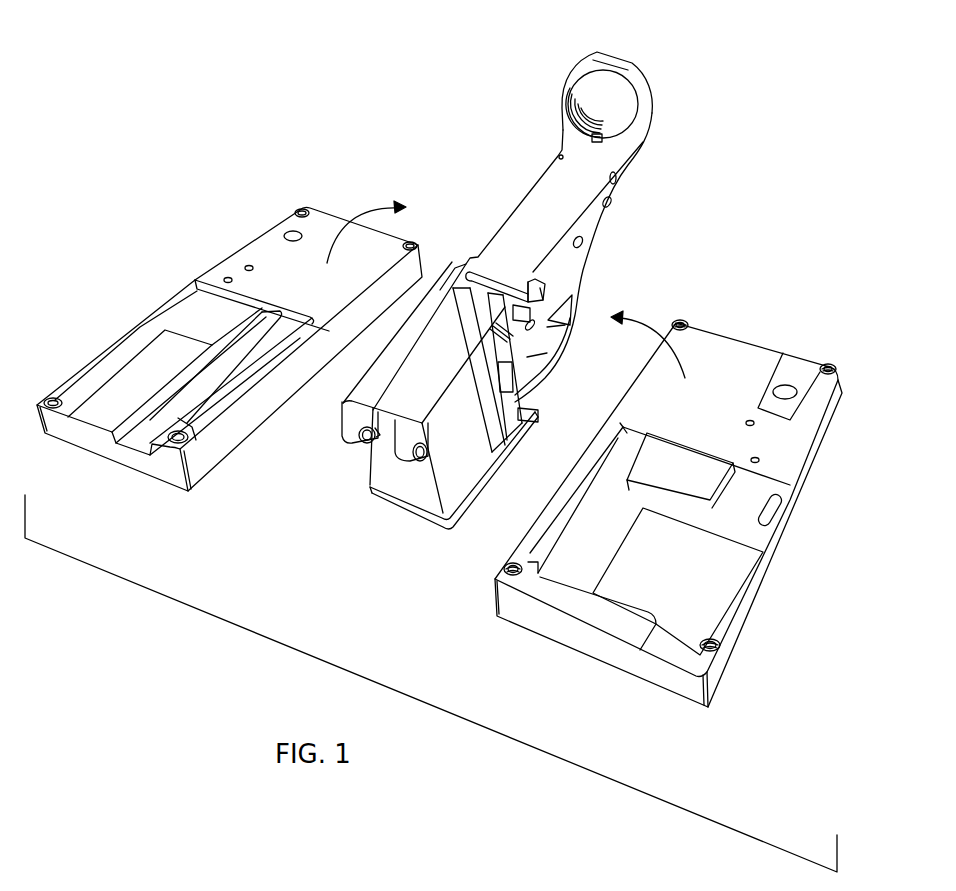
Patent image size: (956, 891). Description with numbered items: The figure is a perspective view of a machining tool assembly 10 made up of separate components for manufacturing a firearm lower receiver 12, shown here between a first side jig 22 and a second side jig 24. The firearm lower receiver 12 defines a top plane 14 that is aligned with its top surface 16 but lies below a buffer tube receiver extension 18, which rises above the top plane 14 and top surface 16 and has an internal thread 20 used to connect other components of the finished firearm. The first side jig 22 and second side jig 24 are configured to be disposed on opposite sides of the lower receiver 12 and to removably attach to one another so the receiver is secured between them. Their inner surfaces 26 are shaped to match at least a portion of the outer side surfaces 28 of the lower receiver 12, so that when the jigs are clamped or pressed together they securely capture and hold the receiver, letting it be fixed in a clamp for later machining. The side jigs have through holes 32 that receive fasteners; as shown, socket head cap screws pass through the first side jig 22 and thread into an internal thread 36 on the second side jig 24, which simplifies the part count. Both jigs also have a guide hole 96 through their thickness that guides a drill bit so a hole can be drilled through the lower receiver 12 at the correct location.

The machining tool assembly 10 is at (153, 58).
The firearm lower receiver 12 is at (587, 257).
The top plane 14 is at (497, 210).
The top surface 16 is at (528, 415).
The buffer tube receiver extension 18 is at (628, 87).
The internal thread 20 is at (558, 98).
The first side jig 22 is at (229, 349).
The second side jig 24 is at (797, 450).
The inner surfaces 26 is at (433, 473).
The outer side surfaces 28 is at (443, 395).
The through holes 32 is at (453, 380).
The internal thread 36 is at (670, 486).
The guide hole 96 is at (521, 285).